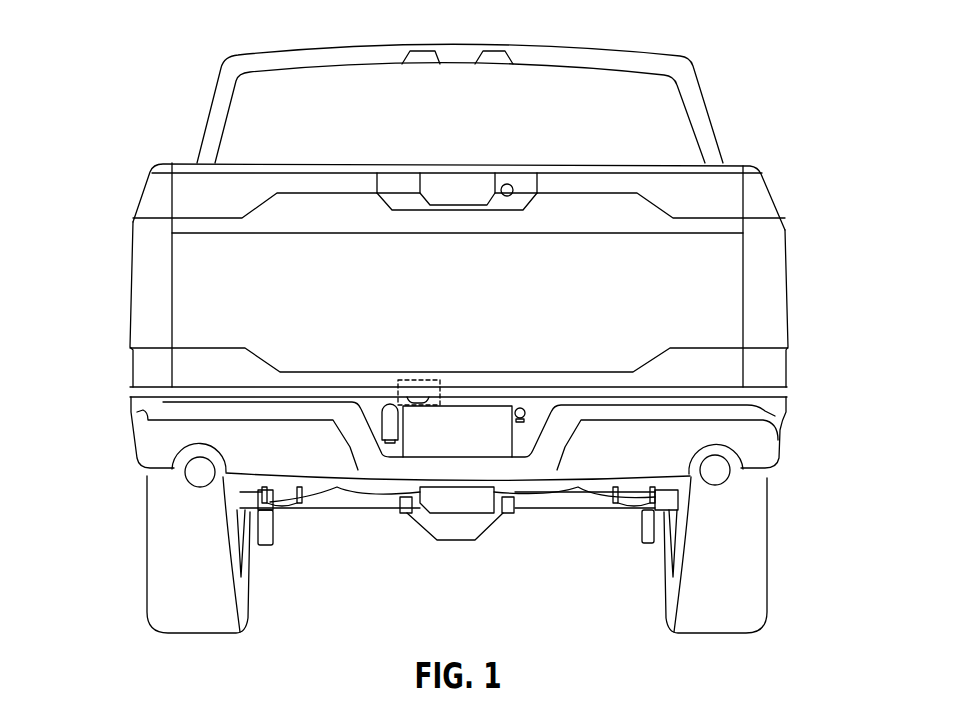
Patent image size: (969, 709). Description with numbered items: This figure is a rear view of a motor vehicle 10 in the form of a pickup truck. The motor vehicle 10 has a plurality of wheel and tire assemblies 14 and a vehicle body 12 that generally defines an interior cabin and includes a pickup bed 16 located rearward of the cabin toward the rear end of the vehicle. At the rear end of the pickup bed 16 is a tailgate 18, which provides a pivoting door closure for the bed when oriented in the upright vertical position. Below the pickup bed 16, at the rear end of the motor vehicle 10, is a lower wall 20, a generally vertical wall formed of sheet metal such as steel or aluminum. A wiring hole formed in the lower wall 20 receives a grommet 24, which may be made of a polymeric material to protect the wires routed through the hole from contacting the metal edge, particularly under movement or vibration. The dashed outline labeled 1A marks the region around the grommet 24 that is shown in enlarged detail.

The motor vehicle 10 is at (446, 338).
The vehicle body 12 is at (202, 127).
The wheel and tire assemblies 14 is at (172, 556).
The pickup bed 16 is at (135, 207).
The tailgate 18 is at (717, 277).
The lower wall 20 is at (213, 396).
The grommet 24 is at (427, 403).
The detail region of FIG. 1A is at (397, 380).